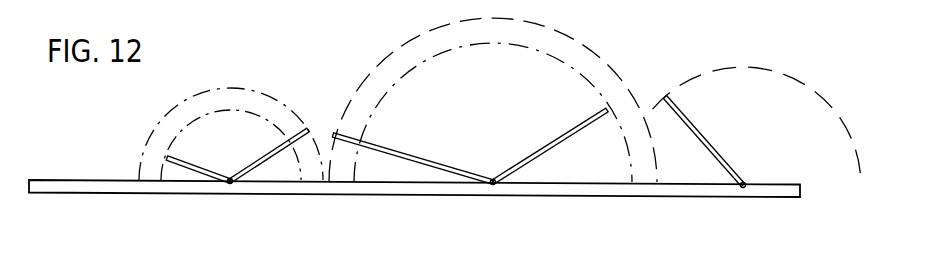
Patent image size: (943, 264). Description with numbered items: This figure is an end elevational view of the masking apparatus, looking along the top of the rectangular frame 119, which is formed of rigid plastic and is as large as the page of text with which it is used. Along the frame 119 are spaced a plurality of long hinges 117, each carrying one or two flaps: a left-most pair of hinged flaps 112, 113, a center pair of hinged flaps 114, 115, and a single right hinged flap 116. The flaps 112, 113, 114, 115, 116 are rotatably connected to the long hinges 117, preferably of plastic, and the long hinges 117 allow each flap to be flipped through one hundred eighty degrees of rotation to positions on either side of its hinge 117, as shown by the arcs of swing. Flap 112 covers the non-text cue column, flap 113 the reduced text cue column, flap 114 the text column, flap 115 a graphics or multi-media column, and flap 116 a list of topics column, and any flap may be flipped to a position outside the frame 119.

The rectangular frame 119 is at (82, 178).
The left hinged flap 112 is at (200, 181).
The left hinged flap 113 is at (288, 183).
The center hinged flap 114 is at (414, 157).
The center hinged flap 115 is at (568, 133).
The right hinged flap 116 is at (722, 157).
The long hinge 117 is at (230, 183).